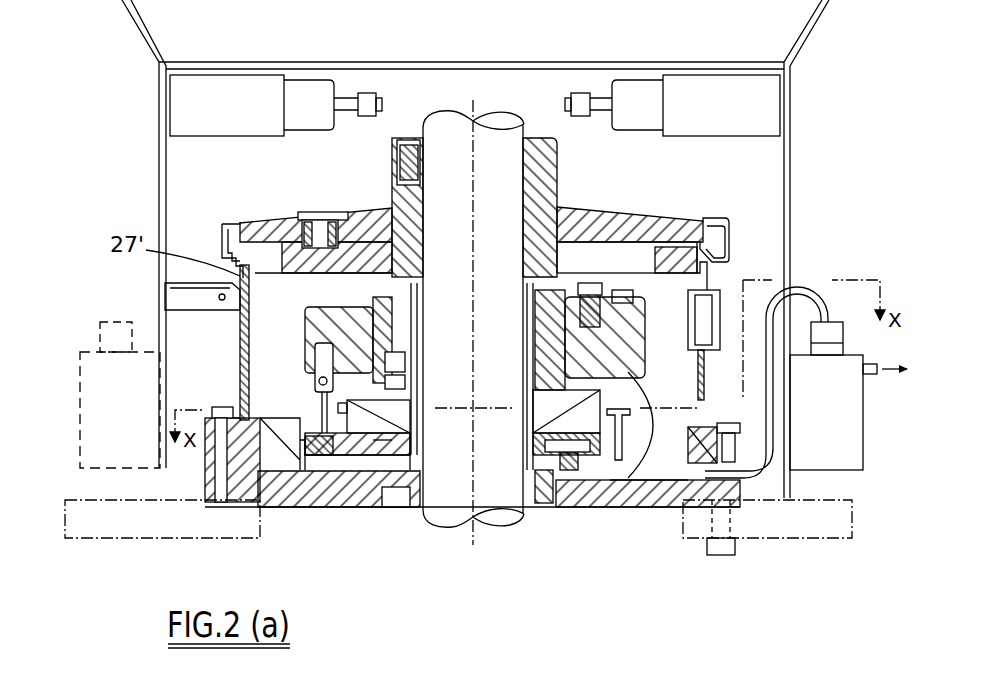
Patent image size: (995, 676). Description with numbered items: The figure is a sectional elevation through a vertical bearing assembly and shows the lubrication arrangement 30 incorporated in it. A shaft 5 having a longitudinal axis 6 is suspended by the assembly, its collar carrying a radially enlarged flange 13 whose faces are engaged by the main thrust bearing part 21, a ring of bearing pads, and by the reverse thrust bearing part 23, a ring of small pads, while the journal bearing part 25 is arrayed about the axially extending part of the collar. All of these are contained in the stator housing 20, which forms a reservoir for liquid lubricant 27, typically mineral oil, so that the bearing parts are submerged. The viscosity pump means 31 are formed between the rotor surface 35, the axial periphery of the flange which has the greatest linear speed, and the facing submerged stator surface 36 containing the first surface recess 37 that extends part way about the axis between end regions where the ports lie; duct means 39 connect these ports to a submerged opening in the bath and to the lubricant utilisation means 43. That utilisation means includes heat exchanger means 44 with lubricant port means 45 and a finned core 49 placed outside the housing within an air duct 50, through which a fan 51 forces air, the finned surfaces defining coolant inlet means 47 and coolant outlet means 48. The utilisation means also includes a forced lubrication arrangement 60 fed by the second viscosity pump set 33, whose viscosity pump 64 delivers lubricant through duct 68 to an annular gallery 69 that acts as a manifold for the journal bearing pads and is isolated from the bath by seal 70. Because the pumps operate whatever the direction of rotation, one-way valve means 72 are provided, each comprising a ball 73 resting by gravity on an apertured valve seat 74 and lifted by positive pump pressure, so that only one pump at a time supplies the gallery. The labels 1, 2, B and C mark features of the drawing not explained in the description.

The fixed-shaft unit 1 is at (338, 508).
The base 2 is at (666, 531).
The shaft 5 is at (442, 508).
The longitudinal axis 6 is at (466, 506).
The flange 13 is at (545, 470).
The stator housing 20 is at (238, 367).
The main thrust bearing part 21 is at (360, 472).
The reverse thrust bearing part 23 is at (616, 370).
The journal bearing part 25 is at (366, 268).
The liquid lubricant 27 is at (250, 318).
The lubrication arrangement 30 is at (755, 262).
The viscosity pump means 31 is at (380, 412).
The second viscosity pump set 33 is at (345, 455).
The rotor surface 35 is at (582, 413).
The stator surface 36 is at (615, 482).
The first surface recess 37 is at (560, 397).
The duct means 39 is at (657, 505).
The lubricant utilisation means 43 is at (839, 266).
The heat exchanger means 44 is at (825, 478).
The lubricant port means 45 is at (828, 322).
The coolant inlet means 47 is at (772, 453).
The coolant outlet means 48 is at (868, 374).
The core 49 is at (836, 403).
The air duct 50 is at (790, 186).
The fan 51 is at (708, 137).
The forced lubrication arrangement 60 is at (348, 325).
The viscosity pump 64 is at (360, 445).
The duct 68 is at (315, 430).
The annular gallery 69 is at (395, 388).
The seal 70 is at (395, 357).
The one-way valve means 72 is at (302, 382).
The ball 73 is at (302, 365).
The apertured valve seat 74 is at (322, 372).
The direction B is at (260, 520).
The direction C is at (640, 480).